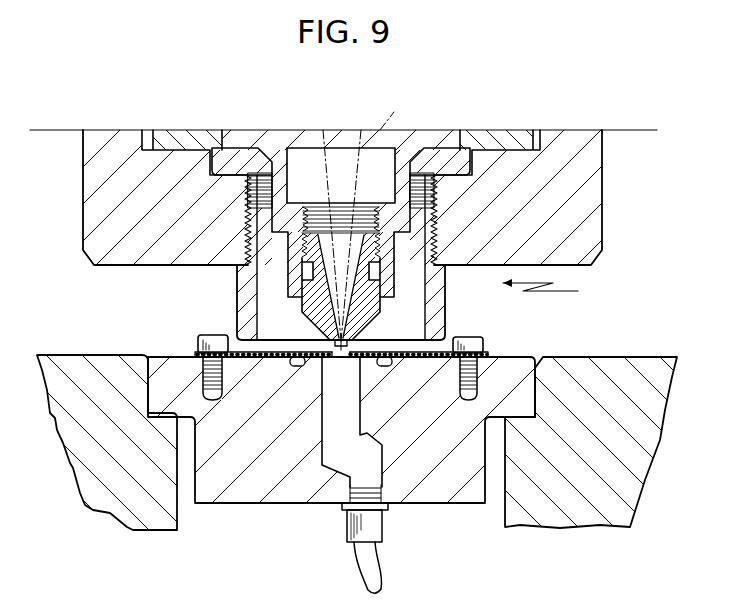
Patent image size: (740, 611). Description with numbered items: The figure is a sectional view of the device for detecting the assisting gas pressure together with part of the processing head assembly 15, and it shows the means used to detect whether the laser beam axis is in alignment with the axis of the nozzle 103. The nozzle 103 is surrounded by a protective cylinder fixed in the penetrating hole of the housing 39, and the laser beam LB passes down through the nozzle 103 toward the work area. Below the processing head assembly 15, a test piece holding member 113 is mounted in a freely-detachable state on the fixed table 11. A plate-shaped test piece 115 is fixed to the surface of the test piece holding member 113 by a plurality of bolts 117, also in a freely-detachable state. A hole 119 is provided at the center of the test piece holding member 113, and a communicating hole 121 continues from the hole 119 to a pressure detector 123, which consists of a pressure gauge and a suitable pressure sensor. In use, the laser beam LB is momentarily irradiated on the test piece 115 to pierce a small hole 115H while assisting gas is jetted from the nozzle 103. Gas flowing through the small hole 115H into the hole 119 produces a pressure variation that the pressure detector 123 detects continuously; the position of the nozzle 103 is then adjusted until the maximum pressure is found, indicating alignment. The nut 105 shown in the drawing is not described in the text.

The housing 39 is at (595, 225).
The nut 105 is at (240, 298).
The nozzle 103 is at (375, 320).
The laser beam LB is at (365, 221).
The test piece 115 is at (250, 358).
The small hole 115H is at (345, 360).
The bolts 117 is at (483, 341).
The test piece holding member 113 is at (212, 487).
The hole 119 is at (330, 437).
The communicating hole 121 is at (377, 465).
The pressure detector 123 is at (347, 533).
The fixed table 11 is at (617, 362).
The processing head assembly 15 is at (554, 292).